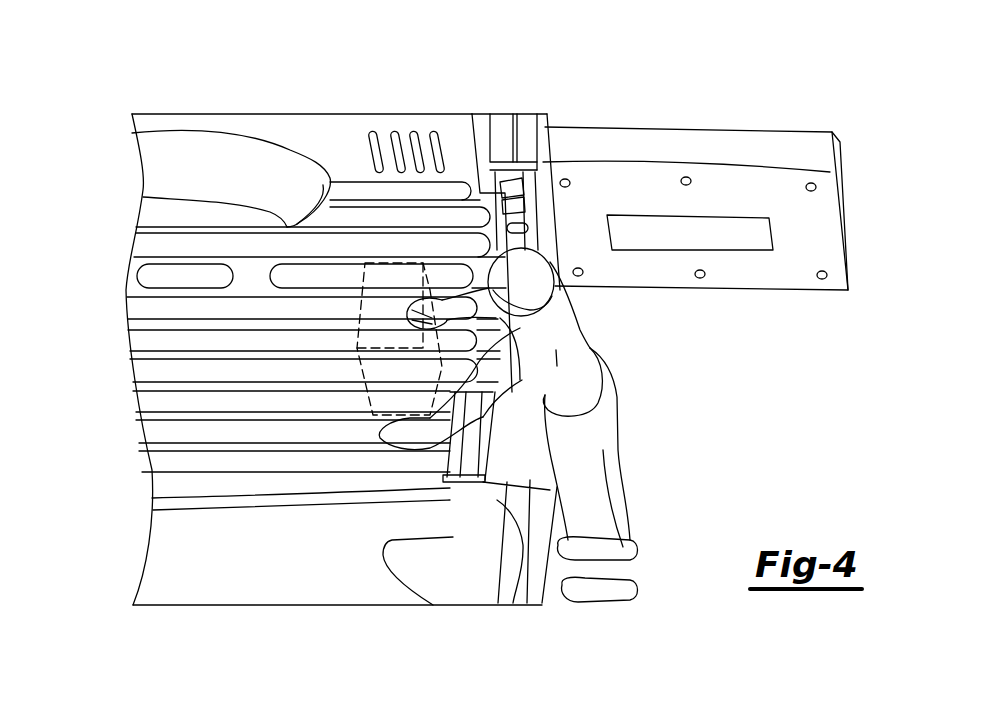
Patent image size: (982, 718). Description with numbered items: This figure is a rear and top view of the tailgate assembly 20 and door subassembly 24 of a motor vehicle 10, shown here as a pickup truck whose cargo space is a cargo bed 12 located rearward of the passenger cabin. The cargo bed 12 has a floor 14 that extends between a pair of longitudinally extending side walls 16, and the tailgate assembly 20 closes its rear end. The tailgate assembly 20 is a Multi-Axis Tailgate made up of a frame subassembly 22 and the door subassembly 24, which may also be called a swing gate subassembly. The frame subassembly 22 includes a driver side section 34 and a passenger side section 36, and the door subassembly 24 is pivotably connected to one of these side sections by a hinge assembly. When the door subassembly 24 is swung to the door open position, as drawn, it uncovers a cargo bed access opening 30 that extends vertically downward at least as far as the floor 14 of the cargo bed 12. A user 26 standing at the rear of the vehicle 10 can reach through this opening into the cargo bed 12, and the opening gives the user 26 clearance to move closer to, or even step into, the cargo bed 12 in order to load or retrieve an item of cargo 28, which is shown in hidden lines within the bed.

The motor vehicle 10 is at (152, 56).
The cargo bed 12 is at (210, 240).
The floor 14 is at (152, 400).
The side walls 16 is at (385, 112).
The tailgate assembly 20 is at (519, 108).
The frame subassembly 22 is at (527, 120).
The door subassembly 24 is at (735, 148).
The user 26 is at (608, 398).
The item of cargo 28 is at (377, 278).
The opening 30 is at (551, 233).
The driver side section 34 is at (513, 603).
The passenger side section 36 is at (520, 148).